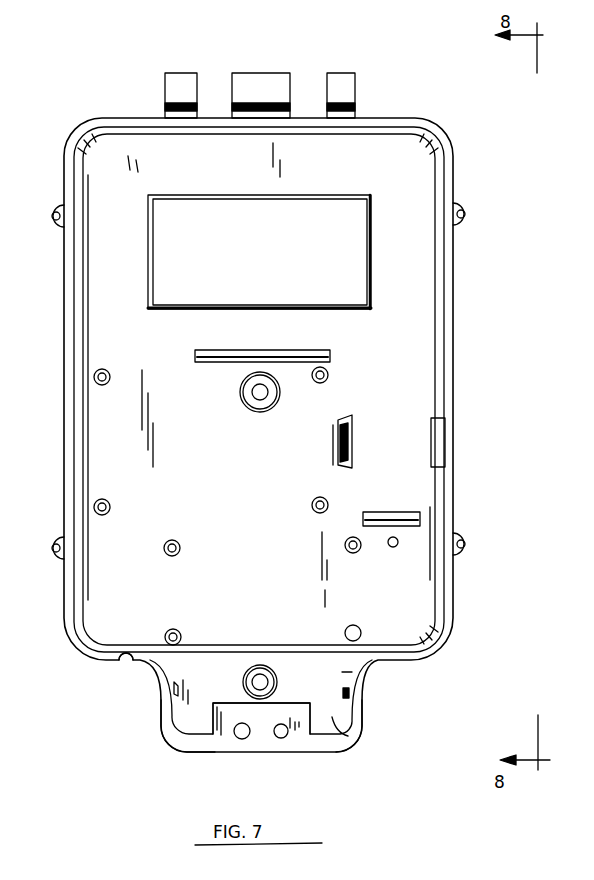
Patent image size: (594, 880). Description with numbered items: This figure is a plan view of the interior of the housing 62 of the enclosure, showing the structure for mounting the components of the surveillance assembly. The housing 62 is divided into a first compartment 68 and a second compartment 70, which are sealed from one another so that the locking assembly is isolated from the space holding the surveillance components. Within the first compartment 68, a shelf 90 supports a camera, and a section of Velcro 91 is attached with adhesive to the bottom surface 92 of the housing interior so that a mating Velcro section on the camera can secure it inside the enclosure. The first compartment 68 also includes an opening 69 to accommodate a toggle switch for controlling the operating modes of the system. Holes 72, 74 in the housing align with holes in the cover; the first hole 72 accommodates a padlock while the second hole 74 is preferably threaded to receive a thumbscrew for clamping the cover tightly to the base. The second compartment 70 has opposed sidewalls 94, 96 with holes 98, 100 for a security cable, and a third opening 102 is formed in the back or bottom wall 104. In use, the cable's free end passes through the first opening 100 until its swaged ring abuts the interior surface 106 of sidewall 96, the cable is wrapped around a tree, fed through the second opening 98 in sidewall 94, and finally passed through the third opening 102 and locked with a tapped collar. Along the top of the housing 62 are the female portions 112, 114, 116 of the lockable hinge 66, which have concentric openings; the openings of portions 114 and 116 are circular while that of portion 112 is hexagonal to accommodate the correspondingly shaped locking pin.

The housing 62 is at (455, 395).
The lockable hinge 66 is at (393, 78).
The first compartment 68 is at (404, 197).
The opening 69 is at (123, 659).
The second compartment 70 is at (200, 712).
The hole 72 is at (242, 740).
The hole 74 is at (280, 740).
The shelf 90 is at (332, 356).
The section of Velcro 91 is at (221, 195).
The bottom surface 92 is at (130, 158).
The sidewall 94 is at (163, 722).
The sidewall 96 is at (364, 718).
The hole 98 is at (176, 688).
The hole 100 is at (348, 697).
The third opening 102 is at (246, 682).
The back or bottom wall 104 is at (343, 737).
The interior surface 106 is at (346, 673).
The female portion of hinge 112 is at (380, 42).
The female portion of hinge 114 is at (290, 40).
The female portion of hinge 116 is at (197, 40).